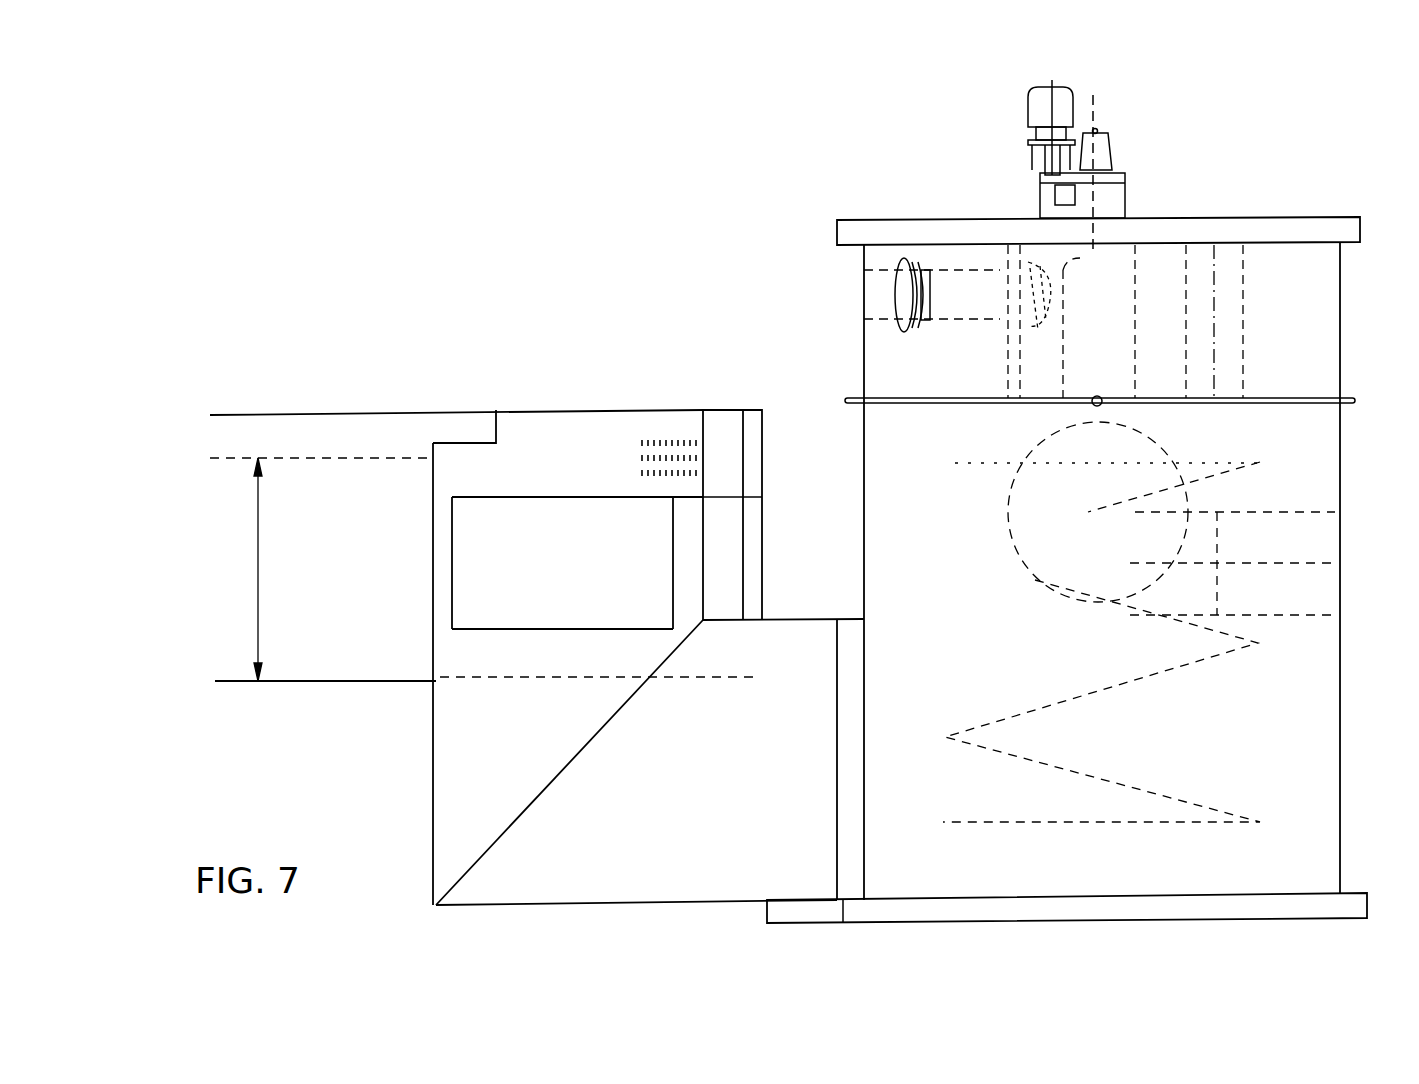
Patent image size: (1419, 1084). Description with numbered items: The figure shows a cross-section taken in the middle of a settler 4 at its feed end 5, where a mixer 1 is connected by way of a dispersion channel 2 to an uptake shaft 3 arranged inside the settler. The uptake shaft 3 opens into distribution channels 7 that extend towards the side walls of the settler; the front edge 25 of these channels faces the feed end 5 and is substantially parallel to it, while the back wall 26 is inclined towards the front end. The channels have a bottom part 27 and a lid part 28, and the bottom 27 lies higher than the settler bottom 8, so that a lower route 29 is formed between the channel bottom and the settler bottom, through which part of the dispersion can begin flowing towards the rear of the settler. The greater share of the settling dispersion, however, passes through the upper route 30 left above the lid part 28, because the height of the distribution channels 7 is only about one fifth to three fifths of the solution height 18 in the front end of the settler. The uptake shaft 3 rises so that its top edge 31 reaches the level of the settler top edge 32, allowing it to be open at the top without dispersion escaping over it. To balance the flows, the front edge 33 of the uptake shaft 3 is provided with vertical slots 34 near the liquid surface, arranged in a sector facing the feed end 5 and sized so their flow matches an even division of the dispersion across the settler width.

The mixer 1 is at (1342, 855).
The dispersion channel 2 is at (678, 885).
The uptake shaft 3 is at (455, 843).
The settler 4 is at (282, 437).
The feed end 5 is at (763, 520).
The distribution channels 7 is at (560, 613).
The settler bottom 8 is at (222, 680).
The solution height 18 is at (258, 571).
The front edge 25 is at (672, 595).
The back wall 26 is at (452, 607).
The bottom part 27 is at (522, 628).
The lid part 28 is at (462, 500).
The lower route 29 is at (465, 655).
The upper route 30 is at (456, 458).
The top edge 31 is at (690, 410).
The settler top edge 32 is at (318, 410).
The front edge 33 is at (703, 478).
The vertical slots 34 is at (668, 445).